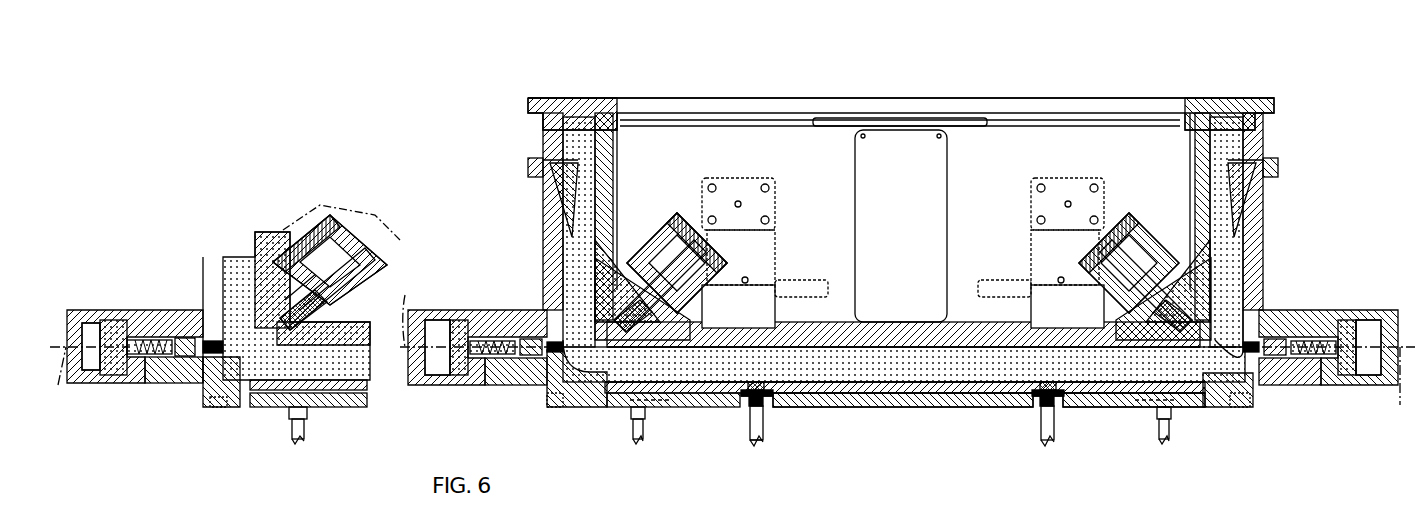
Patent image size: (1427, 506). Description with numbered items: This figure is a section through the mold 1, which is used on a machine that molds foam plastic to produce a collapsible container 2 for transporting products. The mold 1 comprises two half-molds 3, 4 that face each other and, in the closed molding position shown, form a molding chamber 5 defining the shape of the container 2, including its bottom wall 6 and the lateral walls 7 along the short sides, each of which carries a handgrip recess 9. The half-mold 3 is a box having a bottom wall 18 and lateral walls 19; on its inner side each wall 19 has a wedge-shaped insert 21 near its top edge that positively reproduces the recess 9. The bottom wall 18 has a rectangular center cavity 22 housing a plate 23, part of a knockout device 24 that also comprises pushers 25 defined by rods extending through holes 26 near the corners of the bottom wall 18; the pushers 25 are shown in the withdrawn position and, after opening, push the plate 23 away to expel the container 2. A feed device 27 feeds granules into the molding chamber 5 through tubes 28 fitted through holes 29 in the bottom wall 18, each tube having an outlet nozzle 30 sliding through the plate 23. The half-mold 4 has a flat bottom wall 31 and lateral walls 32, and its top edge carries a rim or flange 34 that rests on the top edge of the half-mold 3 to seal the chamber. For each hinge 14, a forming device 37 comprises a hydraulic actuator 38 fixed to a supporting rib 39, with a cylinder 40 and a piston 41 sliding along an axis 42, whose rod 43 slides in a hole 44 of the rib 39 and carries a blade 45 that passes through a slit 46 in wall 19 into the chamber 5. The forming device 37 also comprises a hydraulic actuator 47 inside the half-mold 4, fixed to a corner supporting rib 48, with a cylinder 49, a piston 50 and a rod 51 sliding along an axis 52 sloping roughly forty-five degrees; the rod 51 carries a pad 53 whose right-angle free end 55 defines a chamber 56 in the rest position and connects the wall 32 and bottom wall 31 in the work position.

The mold 1 is at (553, 88).
The collapsible container 2 is at (881, 355).
The half-mold 3 is at (1104, 408).
The half-mold 4 is at (1186, 150).
The molding chamber 5 is at (925, 388).
The bottom wall 6 is at (958, 368).
The lateral wall 7 is at (578, 242).
The recess 9 is at (562, 177).
The hinge 14 is at (553, 365).
The bottom wall 18 is at (888, 400).
The lateral wall 19 is at (553, 259).
The wedge-shaped insert 21 is at (572, 168).
The center cavity 22 is at (722, 385).
The plate 23 is at (846, 394).
The knockout device 24 is at (1152, 440).
The pusher 25 is at (636, 430).
The through hole 26 is at (646, 401).
The feed device 27 is at (754, 466).
The tube 28 is at (765, 427).
The hole 29 is at (748, 404).
The outlet nozzle 30 is at (758, 372).
The bottom wall 31 is at (918, 338).
The lateral wall 32 is at (613, 120).
The rim or flange 34 is at (1246, 112).
The forming device 37 is at (673, 212).
The hydraulic actuator 38 is at (101, 308).
The supporting rib 39 is at (190, 372).
The cylinder 40 is at (80, 372).
The piston 41 is at (105, 374).
The axis 42 is at (727, 352).
The rod 43 is at (118, 342).
The hole 44 is at (188, 343).
The blade 45 is at (613, 300).
The slit 46 is at (554, 340).
The hydraulic actuator 47 is at (731, 241).
The corner supporting rib 48 is at (660, 238).
The cylinder 49 is at (670, 240).
The piston 50 is at (670, 283).
The rod 51 is at (656, 298).
The axis 52 is at (745, 212).
The pad 53 is at (583, 380).
The free end 55 is at (300, 312).
The chamber 56 is at (276, 322).